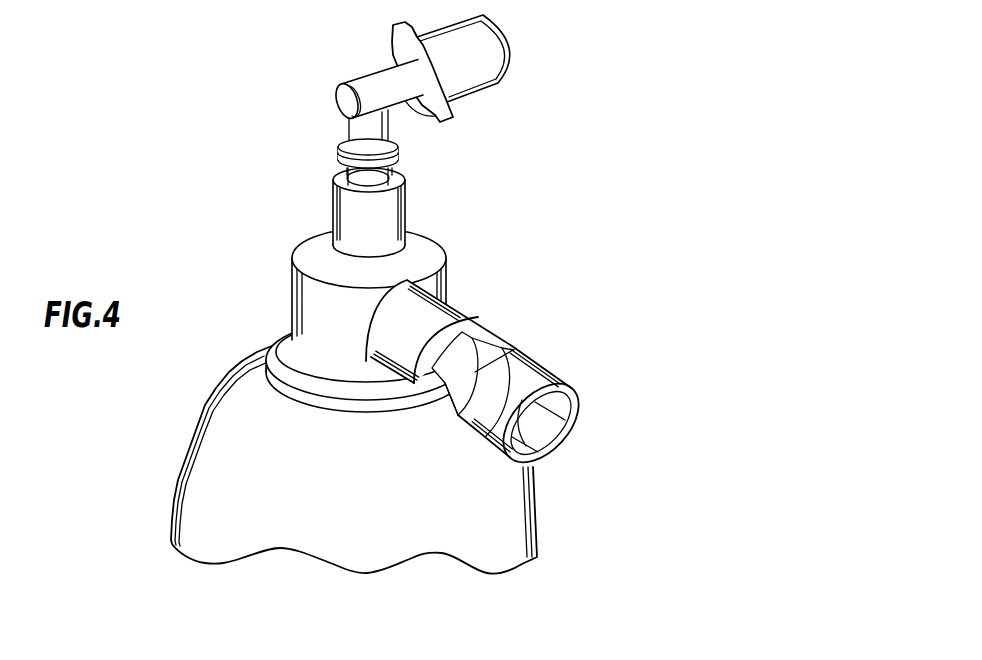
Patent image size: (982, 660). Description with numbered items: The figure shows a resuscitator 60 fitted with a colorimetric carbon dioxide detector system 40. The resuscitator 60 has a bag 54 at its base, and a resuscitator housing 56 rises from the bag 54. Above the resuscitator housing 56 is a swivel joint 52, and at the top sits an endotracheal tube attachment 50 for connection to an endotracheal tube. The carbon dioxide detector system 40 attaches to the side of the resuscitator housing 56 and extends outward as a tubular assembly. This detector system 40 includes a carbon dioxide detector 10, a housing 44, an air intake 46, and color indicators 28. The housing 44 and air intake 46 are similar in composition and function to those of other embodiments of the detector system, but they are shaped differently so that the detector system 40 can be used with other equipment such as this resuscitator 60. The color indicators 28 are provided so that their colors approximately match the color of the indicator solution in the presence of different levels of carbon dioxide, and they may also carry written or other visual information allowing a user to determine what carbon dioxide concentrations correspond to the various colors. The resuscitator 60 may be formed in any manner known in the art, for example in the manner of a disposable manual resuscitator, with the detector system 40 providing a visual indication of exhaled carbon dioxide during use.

The carbon dioxide detector 10 is at (440, 378).
The color indicators 28 is at (470, 323).
The carbon dioxide detector system 40 is at (538, 348).
The housing 44 is at (560, 375).
The air intake 46 is at (430, 307).
The endotracheal tube attachment 50 is at (502, 55).
The swivel joint 52 is at (363, 128).
The bag 54 is at (264, 512).
The resuscitator housing 56 is at (351, 334).
The resuscitator 60 is at (281, 178).